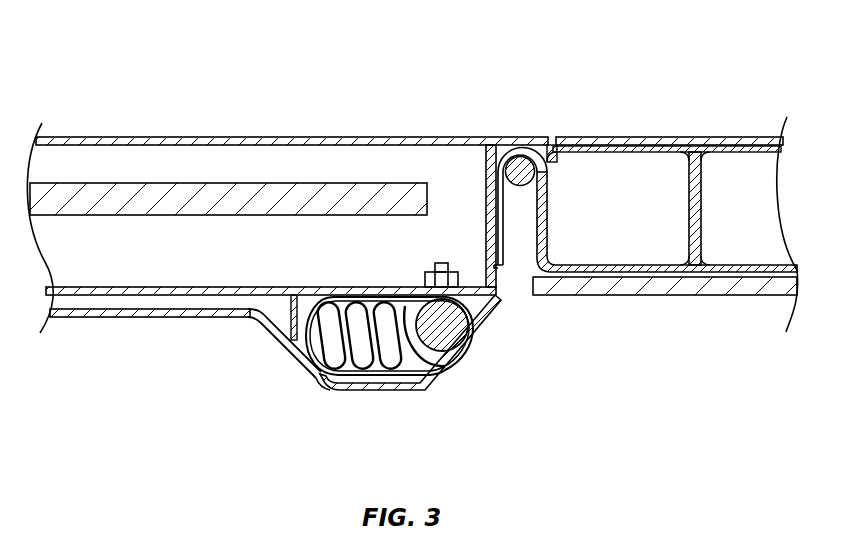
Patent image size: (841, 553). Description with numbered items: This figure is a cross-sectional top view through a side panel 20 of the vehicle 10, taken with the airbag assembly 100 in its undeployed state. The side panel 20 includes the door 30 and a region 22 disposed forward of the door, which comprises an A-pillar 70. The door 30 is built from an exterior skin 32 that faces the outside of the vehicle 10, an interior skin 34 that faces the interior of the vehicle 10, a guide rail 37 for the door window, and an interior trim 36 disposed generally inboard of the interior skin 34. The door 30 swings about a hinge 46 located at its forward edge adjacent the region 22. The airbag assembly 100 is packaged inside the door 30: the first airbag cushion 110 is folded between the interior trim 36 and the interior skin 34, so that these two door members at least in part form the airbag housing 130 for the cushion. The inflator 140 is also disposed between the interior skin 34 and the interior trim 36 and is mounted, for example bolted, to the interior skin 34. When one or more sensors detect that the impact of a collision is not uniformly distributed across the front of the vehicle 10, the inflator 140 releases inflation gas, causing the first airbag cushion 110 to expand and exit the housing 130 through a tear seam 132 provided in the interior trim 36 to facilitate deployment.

The vehicle 10 is at (440, 75).
The side panel 20 is at (570, 344).
The region disposed forward of the door 22 is at (636, 302).
The door 30 is at (232, 375).
The exterior skin 32 is at (400, 132).
The interior skin 34 is at (235, 300).
The interior trim 36 is at (268, 340).
The guide rail 37 is at (285, 216).
The hinge 46 is at (523, 163).
The A-pillar 70 is at (633, 209).
The airbag assembly 100 is at (547, 445).
The first airbag cushion 110 is at (377, 378).
The airbag housing 130 is at (410, 398).
The tear seam 132 is at (322, 383).
The inflator 140 is at (473, 335).